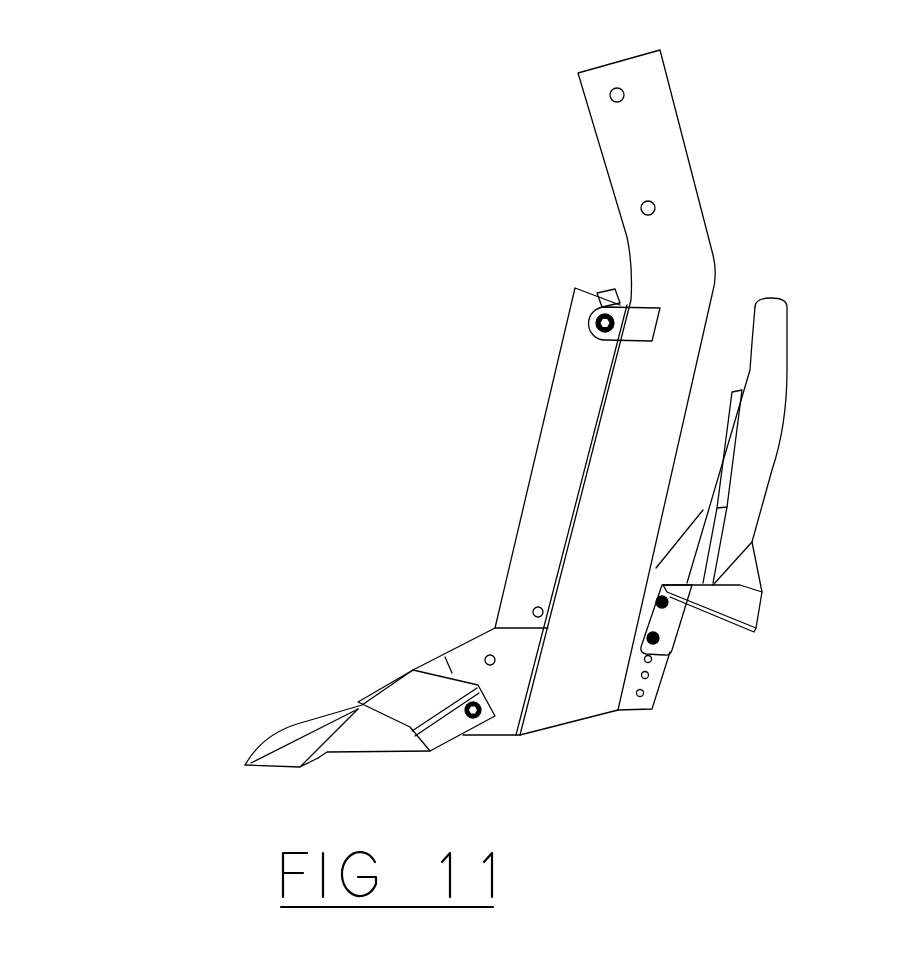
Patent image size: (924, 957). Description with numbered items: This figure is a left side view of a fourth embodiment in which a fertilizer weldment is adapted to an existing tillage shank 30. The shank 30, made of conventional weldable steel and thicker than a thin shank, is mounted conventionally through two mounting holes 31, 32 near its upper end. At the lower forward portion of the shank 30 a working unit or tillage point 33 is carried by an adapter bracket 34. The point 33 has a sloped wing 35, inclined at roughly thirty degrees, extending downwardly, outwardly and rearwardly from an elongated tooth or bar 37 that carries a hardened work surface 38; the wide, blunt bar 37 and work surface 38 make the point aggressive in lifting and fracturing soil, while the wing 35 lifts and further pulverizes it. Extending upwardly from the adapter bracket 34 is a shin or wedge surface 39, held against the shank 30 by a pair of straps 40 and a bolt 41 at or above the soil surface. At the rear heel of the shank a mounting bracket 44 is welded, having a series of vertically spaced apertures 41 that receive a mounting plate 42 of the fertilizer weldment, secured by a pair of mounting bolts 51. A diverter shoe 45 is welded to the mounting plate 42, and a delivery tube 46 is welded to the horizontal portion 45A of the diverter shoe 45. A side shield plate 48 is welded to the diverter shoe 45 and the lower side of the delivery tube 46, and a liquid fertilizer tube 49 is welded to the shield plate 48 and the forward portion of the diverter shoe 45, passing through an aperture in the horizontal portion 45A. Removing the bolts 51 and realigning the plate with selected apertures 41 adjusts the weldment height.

The shank 30 is at (678, 245).
The mounting hole 31 is at (656, 203).
The mounting hole 32 is at (625, 93).
The tillage point 33 is at (377, 660).
The adapter bracket 34 is at (463, 733).
The sloped wing 35 is at (400, 712).
The elongated tooth or bar 37 is at (292, 757).
The hardened work surface 38 is at (295, 727).
The shin or wedge surface 39 is at (558, 467).
The straps 40 is at (637, 332).
The bolt / apertures 41 is at (595, 320).
The mounting plate 42 is at (675, 628).
The mounting bracket 44 is at (630, 707).
The diverter shoe 45 is at (762, 608).
The horizontal portion of diverter shoe 45A is at (663, 583).
The delivery tube 46 is at (783, 430).
The side shield plate 48 is at (740, 575).
The liquid fertilizer tube 49 is at (737, 388).
The mounting bolts 51 is at (648, 635).